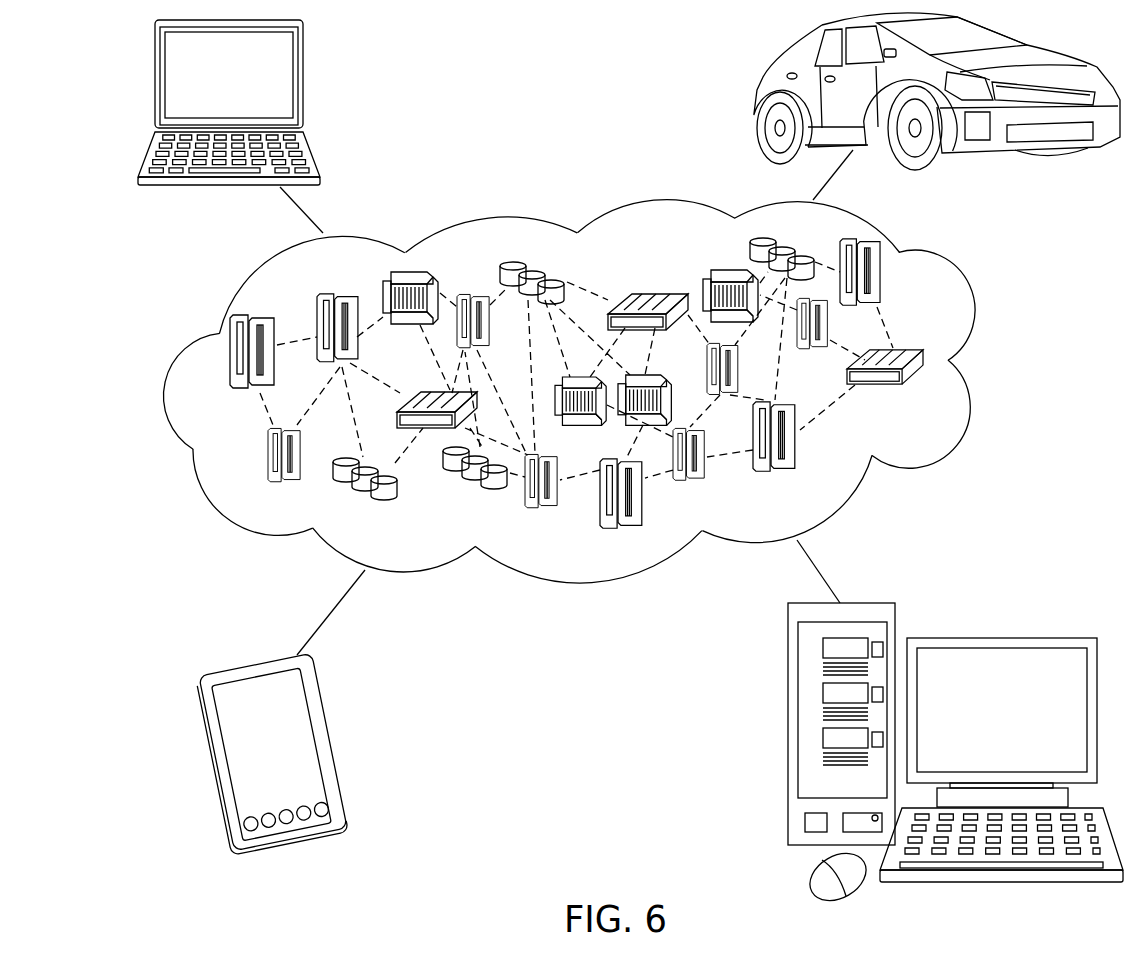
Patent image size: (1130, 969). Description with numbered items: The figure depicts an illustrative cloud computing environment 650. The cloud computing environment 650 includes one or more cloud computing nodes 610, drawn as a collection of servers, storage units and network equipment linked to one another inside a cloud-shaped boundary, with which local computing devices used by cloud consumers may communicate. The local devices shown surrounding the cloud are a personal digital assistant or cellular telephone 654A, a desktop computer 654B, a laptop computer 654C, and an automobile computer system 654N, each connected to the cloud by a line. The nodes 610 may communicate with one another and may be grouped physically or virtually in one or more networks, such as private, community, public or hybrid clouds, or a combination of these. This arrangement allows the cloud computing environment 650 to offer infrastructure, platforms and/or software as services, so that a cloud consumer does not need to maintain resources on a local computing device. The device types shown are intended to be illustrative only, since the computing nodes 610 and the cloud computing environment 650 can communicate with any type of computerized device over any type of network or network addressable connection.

The cloud computing nodes 610 is at (927, 407).
The cloud computing environment 650 is at (975, 321).
The personal digital assistant (PDA) or cellular telephone 654A is at (328, 737).
The desktop computer 654B is at (1000, 637).
The laptop computer 654C is at (303, 62).
The automobile computer system 654N is at (757, 88).